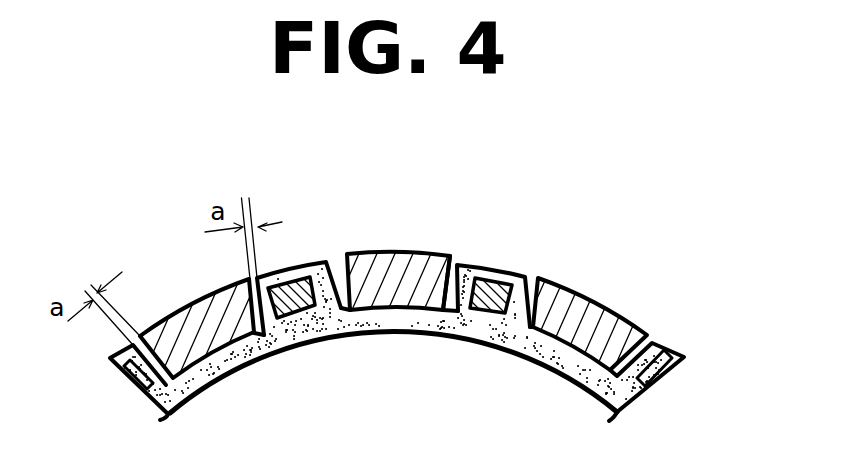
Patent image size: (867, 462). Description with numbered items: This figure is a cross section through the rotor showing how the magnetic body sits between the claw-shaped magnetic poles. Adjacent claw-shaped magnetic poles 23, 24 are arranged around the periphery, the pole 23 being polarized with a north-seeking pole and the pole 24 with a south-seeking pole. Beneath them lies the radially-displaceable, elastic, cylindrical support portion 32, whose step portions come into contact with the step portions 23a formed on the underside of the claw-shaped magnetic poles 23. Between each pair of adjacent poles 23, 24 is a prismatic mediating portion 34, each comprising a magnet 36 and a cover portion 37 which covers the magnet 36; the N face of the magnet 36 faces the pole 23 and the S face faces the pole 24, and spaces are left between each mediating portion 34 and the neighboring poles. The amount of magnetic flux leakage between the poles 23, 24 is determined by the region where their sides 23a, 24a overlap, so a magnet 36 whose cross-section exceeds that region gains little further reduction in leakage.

The claw-shaped magnetic pole 23 is at (197, 310).
The step portion (side) of claw-shaped magnetic pole 23a is at (669, 353).
The claw-shaped magnetic pole 24 is at (400, 258).
The side of claw-shaped magnetic pole 24a is at (468, 262).
The support portion 32 is at (334, 337).
The mediating portion 34 is at (523, 275).
The magnet 36 is at (493, 287).
The cover portion 37 is at (311, 274).